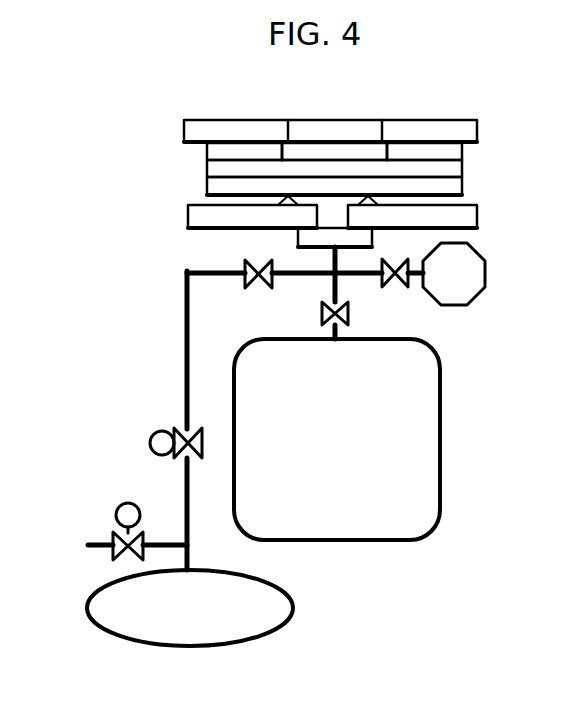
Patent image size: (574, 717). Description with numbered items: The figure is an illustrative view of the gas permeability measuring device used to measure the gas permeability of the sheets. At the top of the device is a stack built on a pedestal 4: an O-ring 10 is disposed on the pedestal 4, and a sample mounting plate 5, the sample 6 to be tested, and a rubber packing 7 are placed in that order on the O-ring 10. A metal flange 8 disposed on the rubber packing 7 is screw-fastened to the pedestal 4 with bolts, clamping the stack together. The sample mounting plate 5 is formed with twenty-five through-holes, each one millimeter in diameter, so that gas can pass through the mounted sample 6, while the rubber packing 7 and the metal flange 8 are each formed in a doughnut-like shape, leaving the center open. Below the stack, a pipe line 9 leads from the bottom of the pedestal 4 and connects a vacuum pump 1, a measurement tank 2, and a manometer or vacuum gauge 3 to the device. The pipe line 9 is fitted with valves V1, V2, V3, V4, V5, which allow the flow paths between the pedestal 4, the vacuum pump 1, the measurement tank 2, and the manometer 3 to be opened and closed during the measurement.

The vacuum pump 1 is at (148, 625).
The measurement tank 2 is at (443, 487).
The manometer (vacuum gauge) 3 is at (486, 290).
The pedestal 4 is at (188, 222).
The sample mounting plate 5 is at (207, 186).
The sample 6 is at (207, 168).
The rubber packing 7 is at (210, 150).
The metal flange 8 is at (236, 120).
The pipe line 9 is at (337, 261).
The O-ring 10 is at (373, 197).
The valve V1 is at (389, 287).
The valve V2 is at (323, 315).
The valve V3 is at (248, 287).
The valve V4 is at (150, 441).
The valve V5 is at (118, 512).